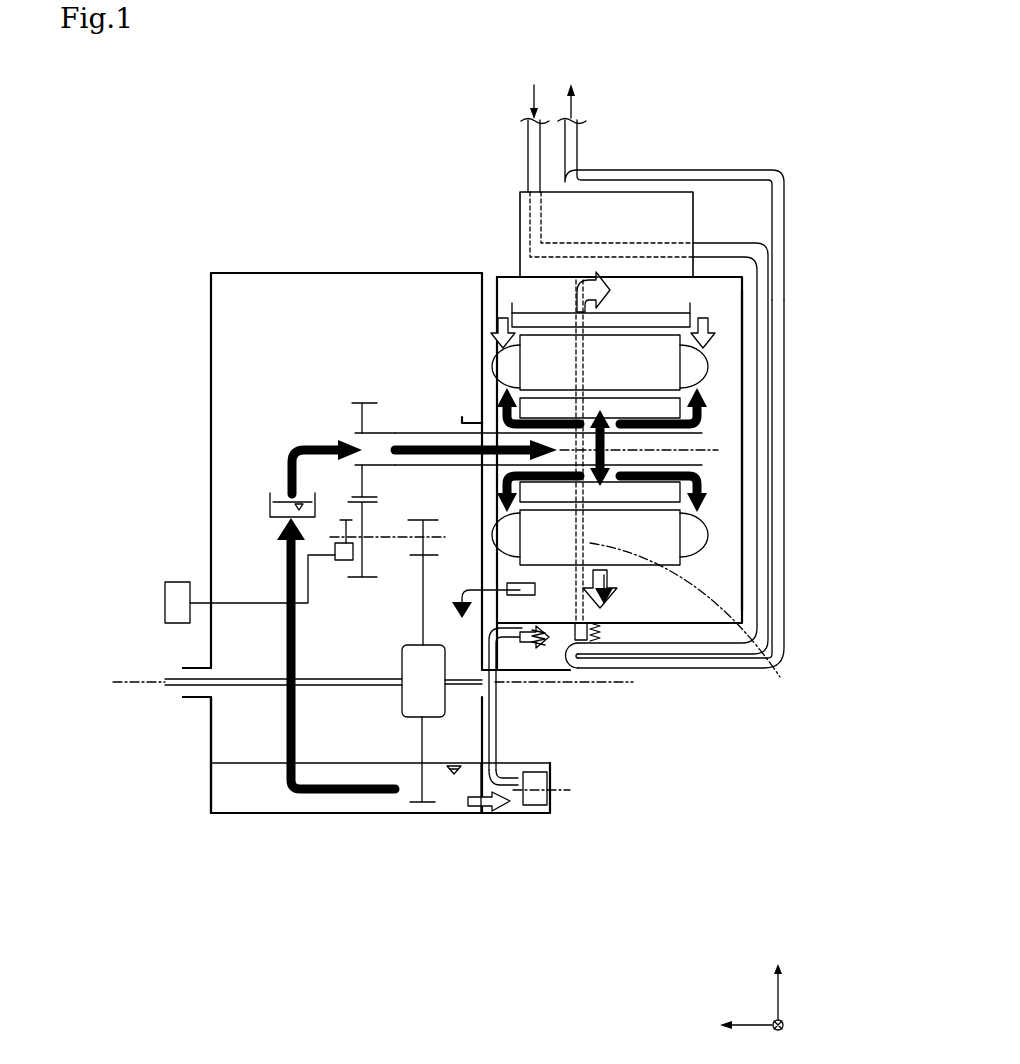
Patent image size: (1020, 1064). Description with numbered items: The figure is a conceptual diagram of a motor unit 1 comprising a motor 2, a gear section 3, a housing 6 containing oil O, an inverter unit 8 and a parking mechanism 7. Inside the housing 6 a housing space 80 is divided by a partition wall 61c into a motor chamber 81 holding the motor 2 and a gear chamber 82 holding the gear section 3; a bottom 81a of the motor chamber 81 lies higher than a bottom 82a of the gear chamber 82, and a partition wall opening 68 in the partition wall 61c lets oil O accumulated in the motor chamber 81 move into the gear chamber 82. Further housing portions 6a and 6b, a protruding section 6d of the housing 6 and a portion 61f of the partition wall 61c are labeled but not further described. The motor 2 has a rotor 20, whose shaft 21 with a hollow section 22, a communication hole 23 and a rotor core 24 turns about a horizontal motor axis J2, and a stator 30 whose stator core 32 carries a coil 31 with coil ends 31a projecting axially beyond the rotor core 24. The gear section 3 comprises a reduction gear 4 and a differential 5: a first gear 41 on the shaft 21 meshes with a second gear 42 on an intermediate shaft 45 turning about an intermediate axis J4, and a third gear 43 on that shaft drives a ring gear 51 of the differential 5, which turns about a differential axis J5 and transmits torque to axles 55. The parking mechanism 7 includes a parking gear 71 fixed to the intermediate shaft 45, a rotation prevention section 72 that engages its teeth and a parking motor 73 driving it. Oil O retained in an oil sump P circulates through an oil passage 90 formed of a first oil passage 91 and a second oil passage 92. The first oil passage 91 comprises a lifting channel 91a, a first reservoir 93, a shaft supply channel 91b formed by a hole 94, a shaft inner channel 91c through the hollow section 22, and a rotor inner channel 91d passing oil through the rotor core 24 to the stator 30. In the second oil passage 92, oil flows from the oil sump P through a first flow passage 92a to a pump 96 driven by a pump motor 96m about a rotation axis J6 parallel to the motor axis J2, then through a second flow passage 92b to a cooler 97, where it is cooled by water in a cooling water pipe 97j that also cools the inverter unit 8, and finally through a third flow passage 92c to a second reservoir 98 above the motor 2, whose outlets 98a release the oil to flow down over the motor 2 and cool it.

The motor unit 1 is at (748, 133).
The motor 2 is at (731, 334).
The gear section 3 is at (276, 318).
The reduction gear 4 is at (354, 596).
The differential 5 is at (392, 703).
The housing 6 is at (755, 260).
The case bottom wall 6a is at (708, 640).
The case bottom portion 6b is at (234, 824).
The protruding section 6d is at (210, 722).
The parking mechanism 7 is at (166, 570).
The inverter unit 8 is at (678, 192).
The rotor 20 is at (662, 407).
The shaft 21 is at (398, 440).
The hollow section 22 is at (380, 443).
The communication hole 23 is at (683, 468).
The rotor core 24 is at (677, 402).
The stator 30 is at (721, 350).
The coil 31 is at (665, 372).
The coil ends 31a is at (708, 533).
The stator core 32 is at (690, 385).
The first gear 41 is at (362, 403).
The second gear 42 is at (368, 577).
The third gear 43 is at (417, 562).
The intermediate shaft 45 is at (390, 537).
The ring gear 51 is at (418, 802).
The axles 55 is at (523, 685).
The partition wall 61c is at (482, 357).
The wall end portion 61f is at (463, 423).
The partition wall opening 68 is at (507, 600).
The parking gear 71 is at (345, 520).
The rotation prevention section 72 is at (338, 560).
The parking motor 73 is at (165, 603).
The housing space 80 is at (752, 294).
The motor chamber 81 is at (483, 308).
The bottom of the motor chamber 81a is at (668, 625).
The gear chamber 82 is at (398, 315).
The bottom of the gear chamber 82a is at (318, 813).
The oil passage 90 is at (401, 940).
The first oil passage 91 is at (300, 752).
The lifting channel 91a is at (282, 588).
The shaft supply channel 91b is at (320, 435).
The shaft inner channel 91c is at (448, 443).
The rotor inner channel 91d is at (697, 423).
The second oil passage 92 is at (432, 738).
The first flow passage 92a is at (487, 817).
The second flow passage 92b is at (495, 720).
The third flow passage 92c is at (780, 668).
The first reservoir 93 is at (270, 505).
The hole 94 is at (335, 443).
The pump 96 is at (540, 817).
The pump motor 96m is at (547, 775).
The cooler 97 is at (560, 675).
The cooling water pipe 97j is at (787, 627).
The second reservoir 98 is at (688, 312).
The outlets 98a is at (502, 310).
The motor axis J2 is at (718, 450).
The intermediate axis J4 is at (398, 511).
The differential axis J5 is at (607, 683).
The rotation axis J6 is at (562, 792).
The oil O is at (453, 800).
The oil sump P is at (202, 800).